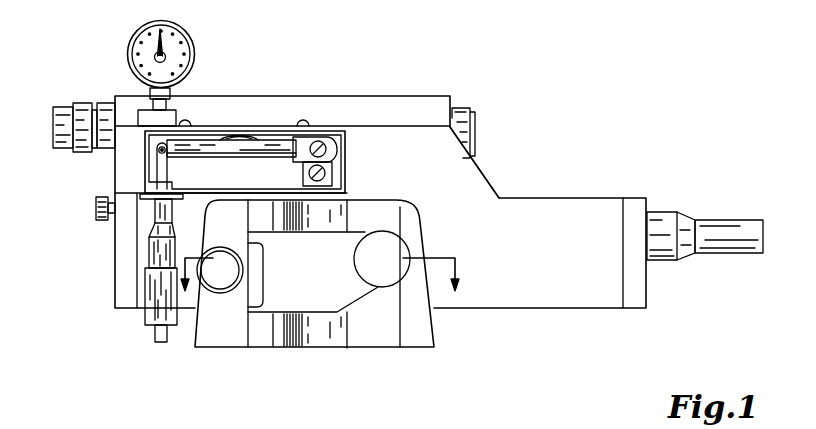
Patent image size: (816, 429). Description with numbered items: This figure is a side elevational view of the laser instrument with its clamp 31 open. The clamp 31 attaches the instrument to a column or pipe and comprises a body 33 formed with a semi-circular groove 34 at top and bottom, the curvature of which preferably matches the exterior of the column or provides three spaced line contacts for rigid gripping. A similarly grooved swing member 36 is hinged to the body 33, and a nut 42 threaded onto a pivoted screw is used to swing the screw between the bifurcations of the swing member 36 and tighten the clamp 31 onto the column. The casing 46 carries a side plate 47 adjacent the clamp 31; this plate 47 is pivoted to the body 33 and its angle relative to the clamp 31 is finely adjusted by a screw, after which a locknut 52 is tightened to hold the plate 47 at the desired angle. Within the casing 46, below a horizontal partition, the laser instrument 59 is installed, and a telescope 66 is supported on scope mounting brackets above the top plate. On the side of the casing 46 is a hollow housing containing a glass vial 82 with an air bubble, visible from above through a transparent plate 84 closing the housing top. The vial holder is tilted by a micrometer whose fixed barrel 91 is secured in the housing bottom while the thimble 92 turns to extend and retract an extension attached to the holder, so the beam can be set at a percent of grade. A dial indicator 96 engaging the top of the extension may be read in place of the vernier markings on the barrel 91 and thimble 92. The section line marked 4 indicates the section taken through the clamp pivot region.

The dial indicator 96 is at (173, 45).
The telescope 66 is at (82, 102).
The glass vial 82 is at (233, 140).
The transparent plate 84 is at (248, 128).
The side plate 47 is at (401, 180).
The casing 46 is at (450, 180).
The nut 42 is at (392, 248).
The section line 4- 4 is at (320, 262).
The semi-circular groove 34 is at (320, 222).
The locknut 52 is at (222, 280).
The micrometer barrel 91 is at (157, 248).
The thimble 92 is at (150, 318).
The swing member 36 is at (205, 337).
The clamp 31 is at (260, 352).
The body 33 is at (378, 333).
The laser instrument 59 is at (717, 245).